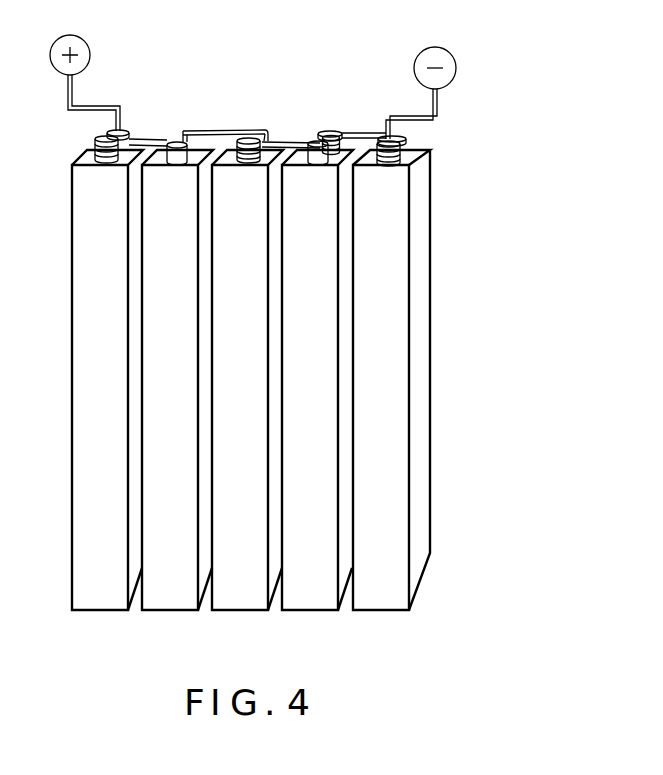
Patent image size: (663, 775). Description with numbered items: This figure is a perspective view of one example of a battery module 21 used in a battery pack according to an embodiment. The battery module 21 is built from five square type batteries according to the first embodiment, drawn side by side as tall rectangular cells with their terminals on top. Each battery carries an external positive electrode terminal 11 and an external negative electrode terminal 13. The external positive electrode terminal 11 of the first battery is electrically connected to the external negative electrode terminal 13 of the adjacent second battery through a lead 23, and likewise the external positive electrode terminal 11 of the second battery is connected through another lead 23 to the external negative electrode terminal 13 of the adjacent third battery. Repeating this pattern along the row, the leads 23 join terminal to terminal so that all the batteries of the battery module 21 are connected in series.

The battery module 21 is at (297, 78).
The lead 23 is at (227, 128).
The external positive electrode terminal 11 is at (318, 133).
The external negative electrode terminal 13 is at (324, 132).